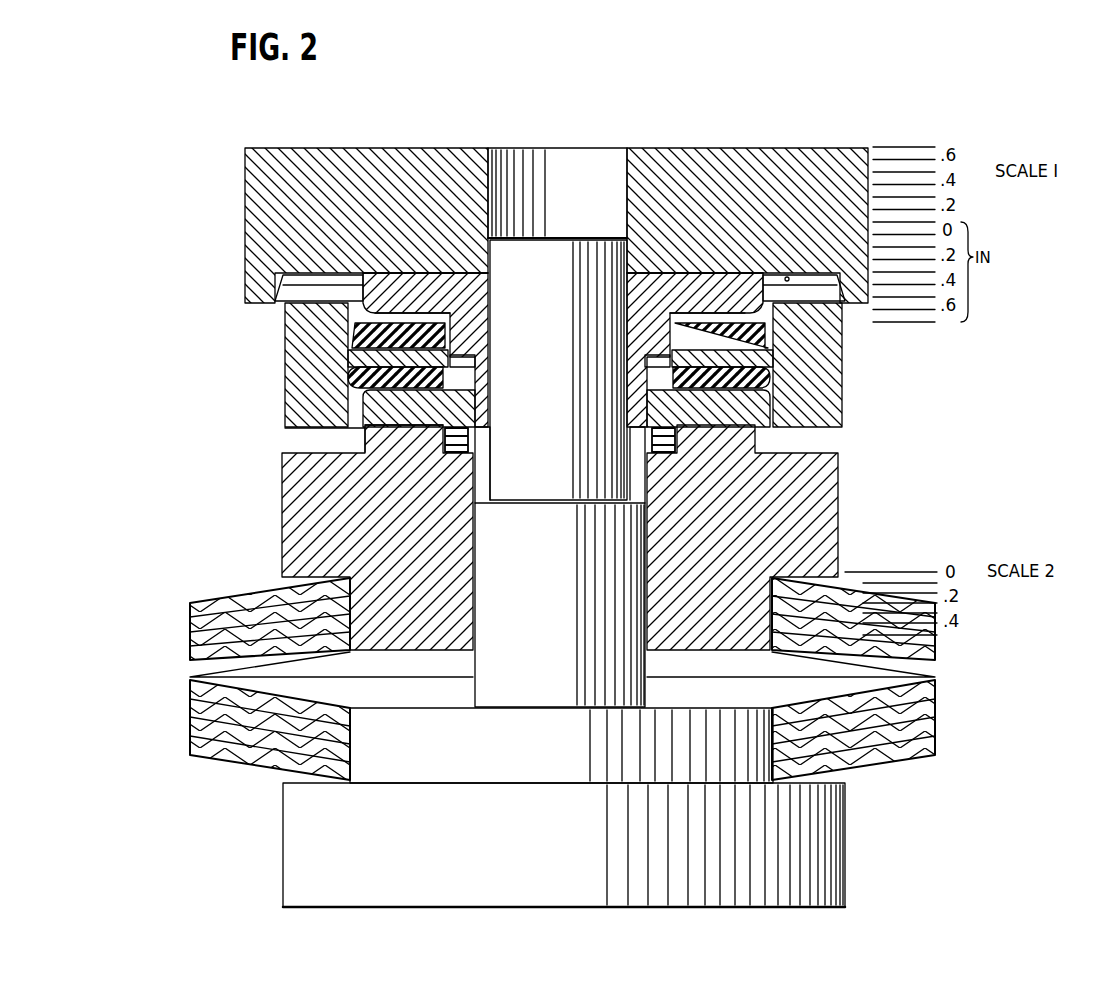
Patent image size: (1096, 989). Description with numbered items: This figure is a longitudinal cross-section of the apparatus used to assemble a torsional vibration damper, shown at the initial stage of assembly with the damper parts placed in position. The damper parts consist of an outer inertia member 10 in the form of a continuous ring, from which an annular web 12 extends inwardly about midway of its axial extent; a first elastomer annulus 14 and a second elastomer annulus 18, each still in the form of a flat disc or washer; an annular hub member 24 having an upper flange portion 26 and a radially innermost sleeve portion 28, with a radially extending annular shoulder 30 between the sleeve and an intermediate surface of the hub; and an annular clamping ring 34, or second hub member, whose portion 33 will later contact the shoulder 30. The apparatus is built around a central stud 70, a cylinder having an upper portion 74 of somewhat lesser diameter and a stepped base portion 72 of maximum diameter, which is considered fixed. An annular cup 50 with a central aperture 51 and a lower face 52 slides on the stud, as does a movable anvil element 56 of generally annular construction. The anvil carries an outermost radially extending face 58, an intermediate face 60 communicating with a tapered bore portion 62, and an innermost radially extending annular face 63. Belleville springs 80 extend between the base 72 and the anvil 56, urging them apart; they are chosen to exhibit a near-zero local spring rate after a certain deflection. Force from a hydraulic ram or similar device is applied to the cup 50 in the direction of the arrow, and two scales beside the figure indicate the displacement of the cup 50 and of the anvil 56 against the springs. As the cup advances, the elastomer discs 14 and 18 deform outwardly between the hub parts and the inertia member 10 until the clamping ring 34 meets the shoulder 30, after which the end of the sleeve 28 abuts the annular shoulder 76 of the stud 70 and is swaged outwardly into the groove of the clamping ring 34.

The outer inertia member 10 is at (300, 338).
The web 12 is at (355, 322).
The first elastomer annulus 14 is at (401, 325).
The second elastomer annulus 18 is at (347, 377).
The hub member 24 is at (470, 323).
The upper flange portion 26 is at (438, 291).
The sleeve portion 28 is at (487, 403).
The annular shoulder 30 is at (478, 358).
The portion of clamping ring 33 is at (463, 383).
The clamping ring 34 is at (415, 422).
The annular cup 50 is at (447, 167).
The central aperture 51 is at (597, 165).
The lower face 52 is at (789, 273).
The movable anvil element 56 is at (292, 488).
The outermost radially extending face 58 is at (342, 442).
The intermediate face 60 is at (732, 425).
The tapered bore portion 62 is at (680, 435).
The innermost radially extending annular face 63 is at (655, 450).
The central stud 70 is at (548, 612).
The base portion 72 is at (568, 850).
The upper portion of stud 74 is at (560, 297).
The annular shoulder of stud 76 is at (485, 500).
The Belleville springs 80 is at (182, 632).